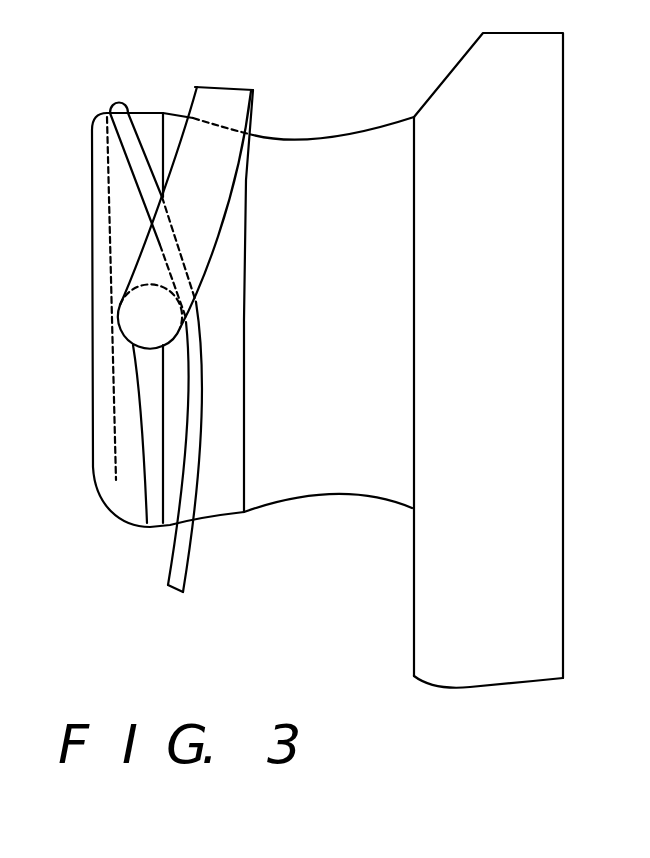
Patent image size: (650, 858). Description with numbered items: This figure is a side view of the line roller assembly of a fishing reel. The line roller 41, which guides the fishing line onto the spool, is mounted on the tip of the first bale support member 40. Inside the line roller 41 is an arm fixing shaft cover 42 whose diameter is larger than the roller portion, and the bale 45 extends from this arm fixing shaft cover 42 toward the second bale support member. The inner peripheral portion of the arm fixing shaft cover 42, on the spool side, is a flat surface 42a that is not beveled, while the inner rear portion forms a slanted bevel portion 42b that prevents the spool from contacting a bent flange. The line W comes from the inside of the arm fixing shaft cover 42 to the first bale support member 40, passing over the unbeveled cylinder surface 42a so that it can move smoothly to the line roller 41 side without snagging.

The first bale support member 40 is at (475, 643).
The line roller 41 is at (318, 472).
The arm fixing shaft cover 42 is at (132, 468).
The flat surface 42a is at (135, 137).
The slanted bevel portion 42b is at (125, 513).
The bale 45 is at (217, 182).
The line W is at (159, 327).